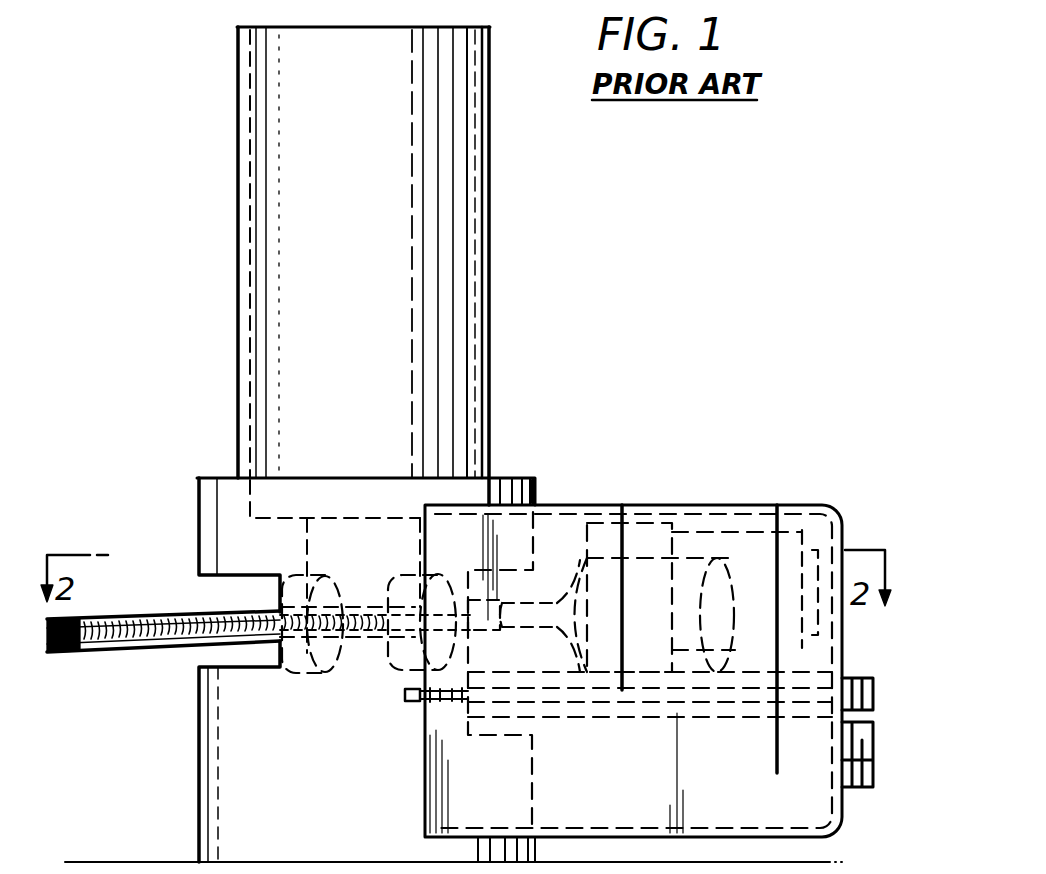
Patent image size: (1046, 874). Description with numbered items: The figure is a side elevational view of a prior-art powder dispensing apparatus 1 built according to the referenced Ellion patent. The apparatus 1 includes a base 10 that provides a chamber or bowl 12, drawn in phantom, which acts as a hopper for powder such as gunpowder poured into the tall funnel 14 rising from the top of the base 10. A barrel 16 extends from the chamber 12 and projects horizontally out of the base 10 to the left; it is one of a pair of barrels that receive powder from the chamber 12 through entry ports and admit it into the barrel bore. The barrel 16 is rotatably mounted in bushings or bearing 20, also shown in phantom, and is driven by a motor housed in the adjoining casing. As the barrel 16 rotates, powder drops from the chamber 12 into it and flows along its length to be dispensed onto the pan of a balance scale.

The powder dispensing apparatus 1 is at (647, 248).
The base 10 is at (520, 477).
The chamber or bowl 12 is at (355, 652).
The funnel 14 is at (490, 252).
The barrel 16 is at (107, 652).
The bushings or bearing 20 is at (398, 587).